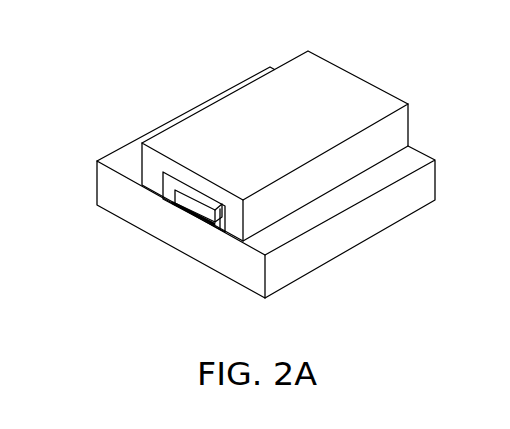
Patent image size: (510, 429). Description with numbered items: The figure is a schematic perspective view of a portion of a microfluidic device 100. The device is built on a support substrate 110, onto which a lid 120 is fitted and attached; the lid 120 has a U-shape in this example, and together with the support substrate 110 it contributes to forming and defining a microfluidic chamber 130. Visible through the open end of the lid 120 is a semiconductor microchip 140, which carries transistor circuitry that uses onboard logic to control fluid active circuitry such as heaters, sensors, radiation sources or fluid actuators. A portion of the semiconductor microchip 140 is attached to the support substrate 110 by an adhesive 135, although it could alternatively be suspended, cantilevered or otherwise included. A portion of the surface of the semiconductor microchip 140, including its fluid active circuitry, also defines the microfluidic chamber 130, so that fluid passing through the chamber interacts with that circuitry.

The microfluidic device 100 is at (197, 48).
The support substrate 110 is at (410, 162).
The lid 120 is at (352, 94).
The microfluidic chamber 130 is at (158, 192).
The adhesive 135 is at (187, 210).
The semiconductor microchip 140 is at (186, 205).